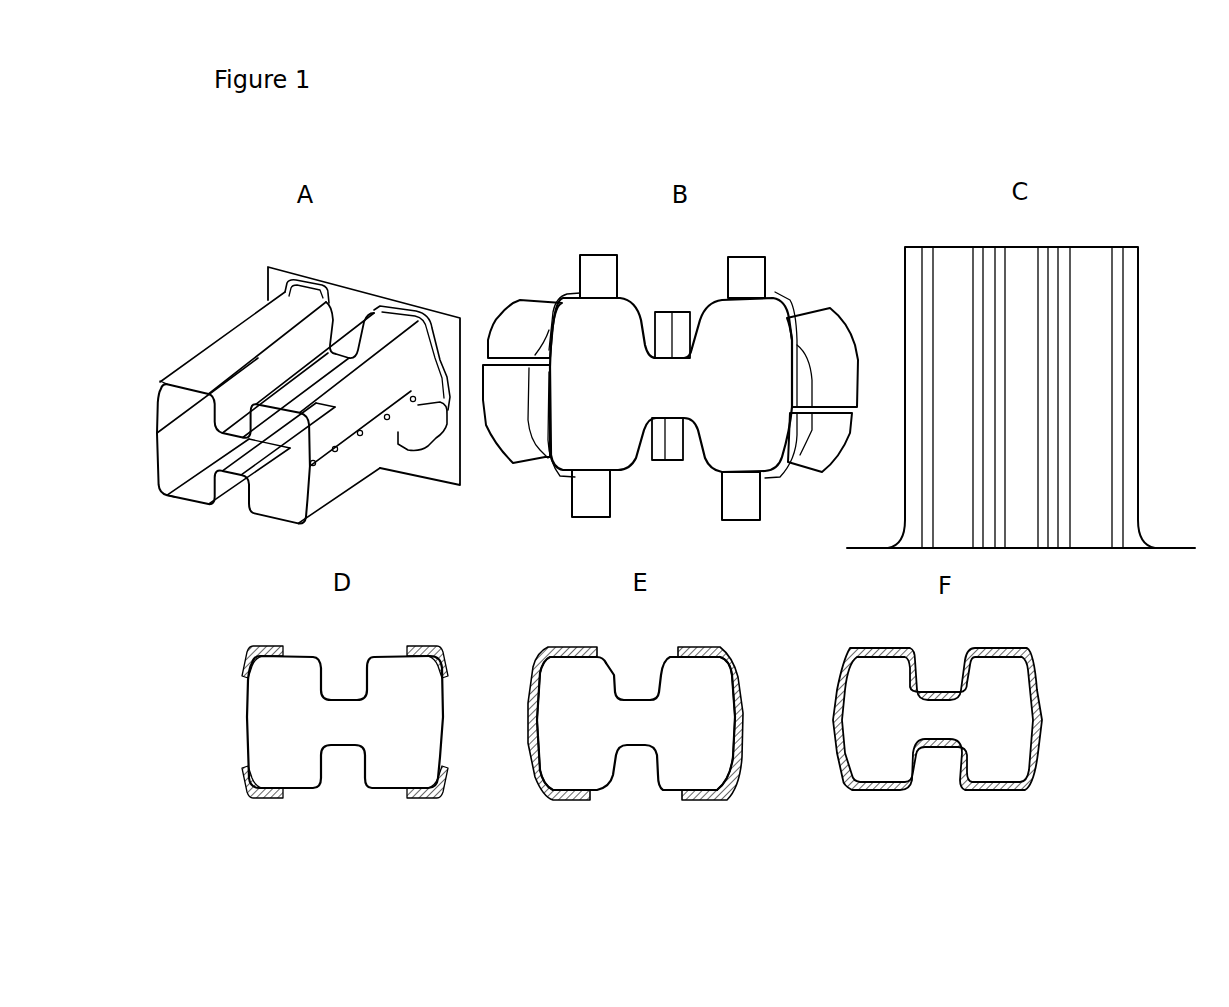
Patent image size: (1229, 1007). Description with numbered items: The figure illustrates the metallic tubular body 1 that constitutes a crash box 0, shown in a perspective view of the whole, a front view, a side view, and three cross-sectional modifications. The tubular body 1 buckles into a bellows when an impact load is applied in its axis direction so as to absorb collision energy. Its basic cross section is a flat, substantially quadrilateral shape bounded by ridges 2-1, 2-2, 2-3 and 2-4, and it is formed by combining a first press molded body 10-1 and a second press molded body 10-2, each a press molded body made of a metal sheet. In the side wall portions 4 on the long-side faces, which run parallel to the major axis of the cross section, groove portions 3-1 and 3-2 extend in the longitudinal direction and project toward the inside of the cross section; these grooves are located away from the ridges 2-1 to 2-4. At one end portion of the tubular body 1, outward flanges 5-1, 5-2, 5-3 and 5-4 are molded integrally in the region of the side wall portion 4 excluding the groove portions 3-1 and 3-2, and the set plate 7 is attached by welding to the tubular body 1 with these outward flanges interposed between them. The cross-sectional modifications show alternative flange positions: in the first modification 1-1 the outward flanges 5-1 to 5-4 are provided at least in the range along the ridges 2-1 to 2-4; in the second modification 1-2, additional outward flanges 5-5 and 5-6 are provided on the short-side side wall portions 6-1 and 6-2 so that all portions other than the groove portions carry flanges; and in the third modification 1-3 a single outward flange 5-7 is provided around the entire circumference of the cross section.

The crash box 0 is at (233, 266).
The tubular body 1 is at (207, 343).
The modification of the tubular body 1-1 is at (292, 628).
The modification of the tubular body 1-2 is at (598, 632).
The modification of the tubular body 1-3 is at (897, 633).
The ridge 2-1 is at (284, 280).
The ridge 2-2 is at (423, 330).
The ridge 2-3 is at (423, 463).
The ridge 2-4 is at (558, 475).
The groove portion 3-1 is at (672, 335).
The groove portion 3-2 is at (667, 462).
The side wall portion 4 is at (378, 337).
The outward flange 5-1 is at (500, 315).
The outward flange 5-2 is at (850, 320).
The outward flange 5-3 is at (838, 462).
The outward flange 5-4 is at (500, 460).
The outward flange 5-5 is at (740, 677).
The outward flange 5-6 is at (547, 650).
The outward flange 5-7 is at (1037, 670).
The short-side side wall portion 6-1 is at (735, 727).
The short-side side wall portion 6-2 is at (537, 728).
The set plate 7 is at (342, 284).
The first press molded body 10-1 is at (173, 357).
The second press molded body 10-2 is at (195, 510).